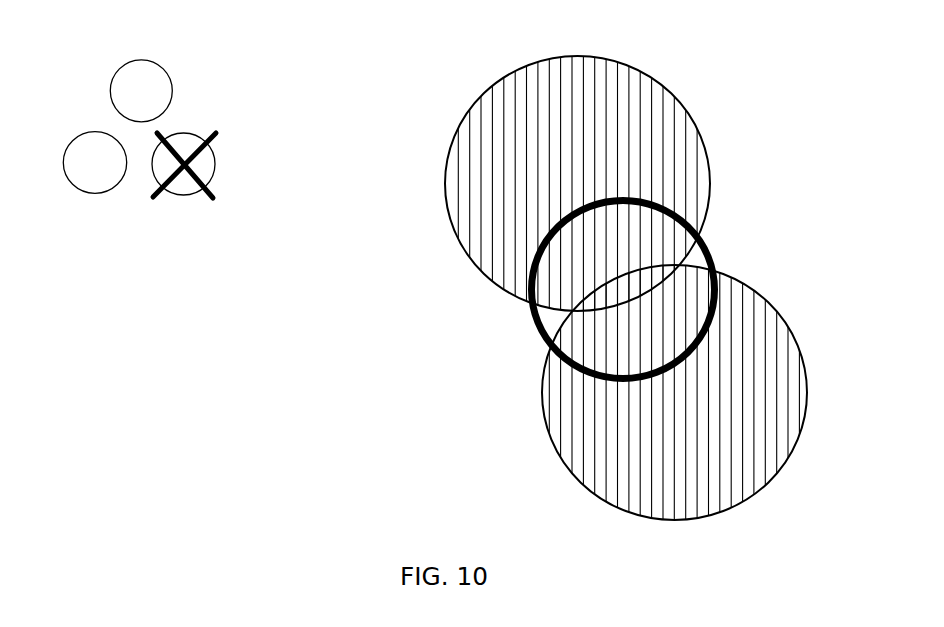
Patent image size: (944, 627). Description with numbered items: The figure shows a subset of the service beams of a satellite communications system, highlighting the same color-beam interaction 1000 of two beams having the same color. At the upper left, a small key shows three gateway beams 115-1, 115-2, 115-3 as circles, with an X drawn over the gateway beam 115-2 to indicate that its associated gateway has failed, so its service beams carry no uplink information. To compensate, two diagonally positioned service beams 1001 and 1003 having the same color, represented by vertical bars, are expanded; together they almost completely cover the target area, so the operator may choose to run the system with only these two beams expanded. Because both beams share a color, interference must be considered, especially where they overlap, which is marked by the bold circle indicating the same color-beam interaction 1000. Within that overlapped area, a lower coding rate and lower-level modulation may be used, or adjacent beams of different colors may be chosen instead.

The gateway beam 115-1 is at (139, 82).
The gateway beam 115-2 is at (206, 170).
The gateway beam 115-3 is at (86, 170).
The service beam 1001 is at (525, 120).
The service beam 1003 is at (580, 432).
The same color-beam interaction 1000 is at (802, 78).